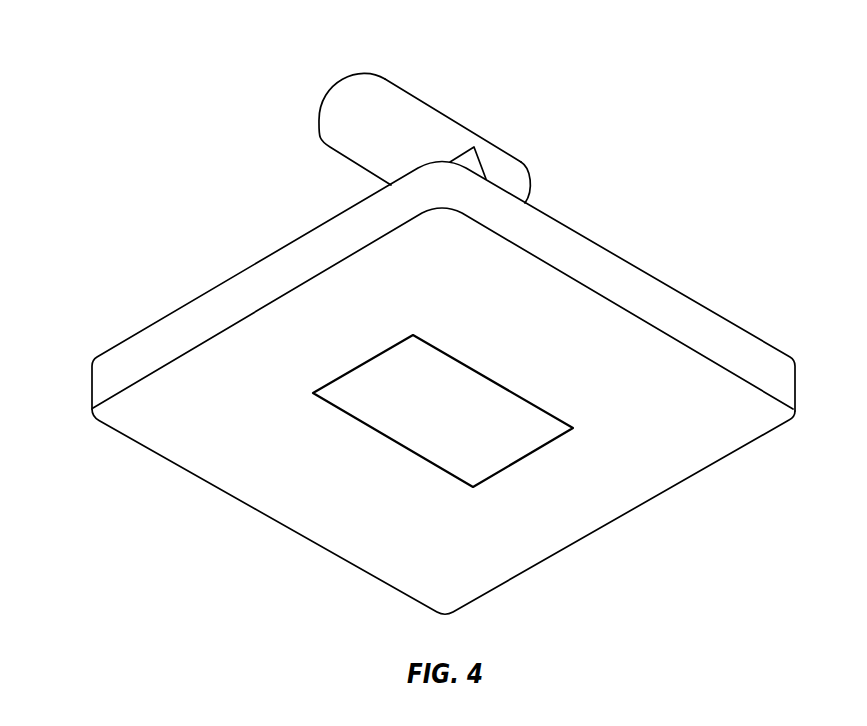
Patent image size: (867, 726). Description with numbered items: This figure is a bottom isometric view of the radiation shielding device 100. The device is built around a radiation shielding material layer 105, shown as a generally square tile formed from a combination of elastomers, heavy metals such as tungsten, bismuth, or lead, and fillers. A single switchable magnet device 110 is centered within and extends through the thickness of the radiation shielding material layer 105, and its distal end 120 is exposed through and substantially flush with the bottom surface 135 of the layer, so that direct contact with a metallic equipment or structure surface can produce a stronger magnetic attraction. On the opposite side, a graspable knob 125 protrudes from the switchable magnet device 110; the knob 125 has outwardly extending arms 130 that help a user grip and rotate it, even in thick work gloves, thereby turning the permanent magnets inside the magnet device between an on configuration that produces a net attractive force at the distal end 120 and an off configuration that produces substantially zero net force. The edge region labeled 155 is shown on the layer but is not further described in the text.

The radiation shielding device 100 is at (114, 69).
The radiation shielding material layer 105 is at (127, 355).
The switchable magnet device 110 is at (529, 130).
The distal end 120 is at (482, 400).
The knob 125 is at (465, 130).
The arms 130 is at (328, 92).
The bottom surface 135 is at (630, 492).
The side wall 155 is at (195, 298).